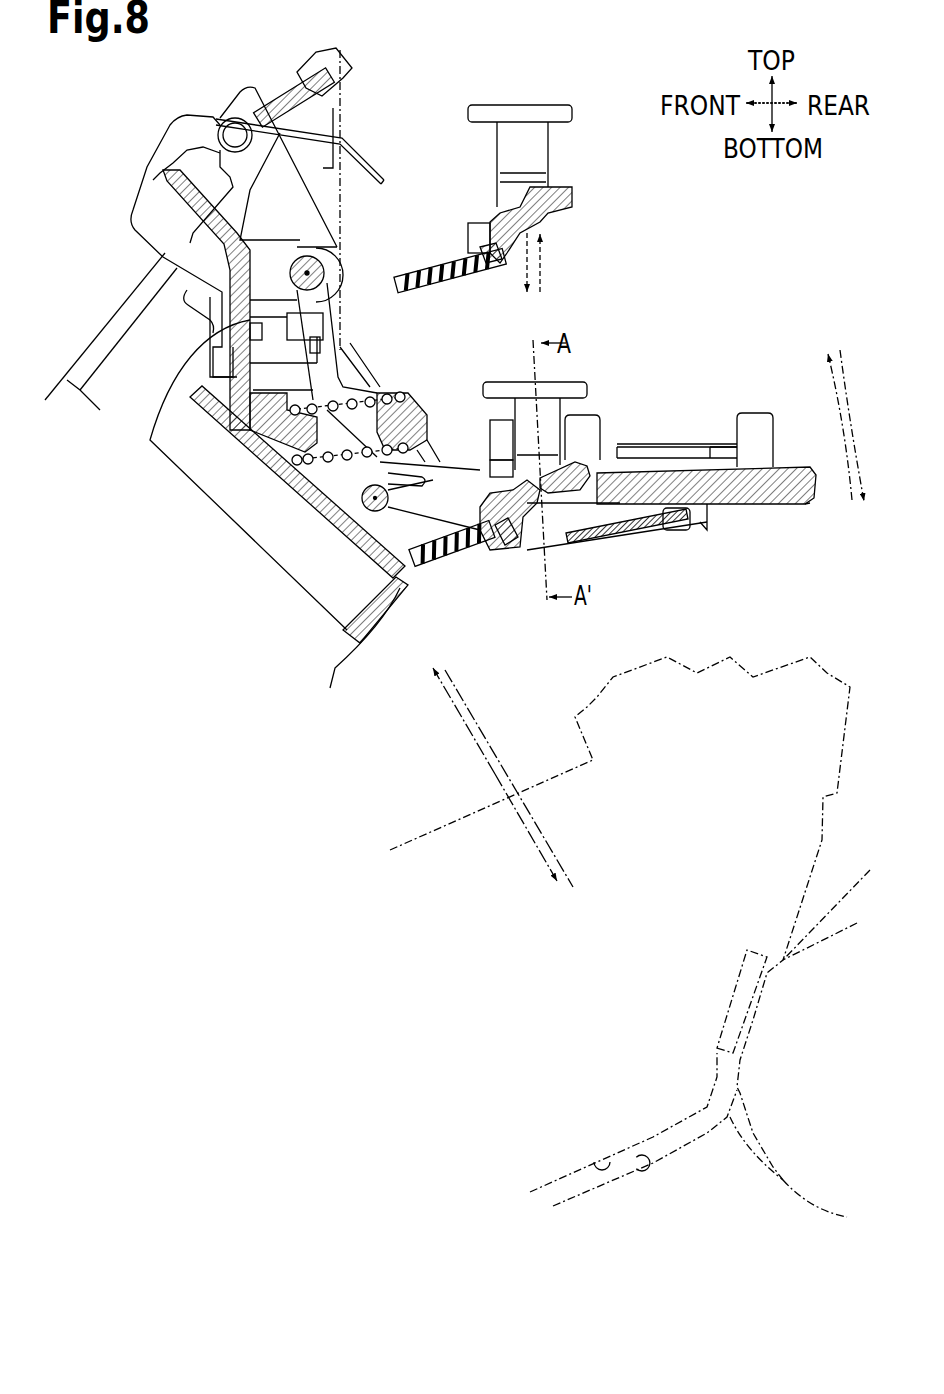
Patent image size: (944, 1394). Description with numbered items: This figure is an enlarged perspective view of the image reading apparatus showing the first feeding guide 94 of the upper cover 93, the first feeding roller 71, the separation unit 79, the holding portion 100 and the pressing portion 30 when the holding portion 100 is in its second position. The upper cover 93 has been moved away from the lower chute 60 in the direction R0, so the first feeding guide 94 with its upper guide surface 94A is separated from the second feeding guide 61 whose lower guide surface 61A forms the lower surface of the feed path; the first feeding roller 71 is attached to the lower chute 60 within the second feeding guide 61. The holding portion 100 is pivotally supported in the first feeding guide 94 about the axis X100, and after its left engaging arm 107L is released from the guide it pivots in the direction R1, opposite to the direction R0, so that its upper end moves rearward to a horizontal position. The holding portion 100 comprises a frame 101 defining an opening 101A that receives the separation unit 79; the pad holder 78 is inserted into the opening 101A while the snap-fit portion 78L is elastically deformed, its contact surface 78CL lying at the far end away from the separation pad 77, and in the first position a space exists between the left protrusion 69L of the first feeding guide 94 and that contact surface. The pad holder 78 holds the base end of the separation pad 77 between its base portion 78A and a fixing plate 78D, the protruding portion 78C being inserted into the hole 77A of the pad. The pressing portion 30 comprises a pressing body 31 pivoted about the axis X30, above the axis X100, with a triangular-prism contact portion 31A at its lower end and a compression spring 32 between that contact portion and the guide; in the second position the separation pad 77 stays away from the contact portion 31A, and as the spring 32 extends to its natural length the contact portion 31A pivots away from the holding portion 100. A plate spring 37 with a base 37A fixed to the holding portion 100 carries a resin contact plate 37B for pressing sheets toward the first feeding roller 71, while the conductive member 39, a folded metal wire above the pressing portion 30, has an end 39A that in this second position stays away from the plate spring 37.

The upper cover 93 is at (176, 115).
The left protrusion 69L is at (207, 377).
The conductive member 39 is at (260, 110).
The end of conductive member 39A is at (377, 176).
The axis of pressing body X30 is at (342, 258).
The pressing body 31 is at (317, 316).
The spring 32 is at (357, 390).
The contact portion 31A is at (428, 412).
The pressing portion 30 is at (290, 462).
The axis of holding portion X100 is at (338, 474).
The first feeding guide 94 is at (345, 628).
The upper guide surface 94A is at (596, 1160).
The separation pad 77 is at (416, 266).
The hole 77A is at (487, 263).
The base portion 78A is at (483, 227).
The protruding portion 78C is at (484, 268).
The pad holder 78 is at (582, 186).
The separation unit 79 is at (582, 102).
The contact surface 78CL is at (490, 106).
The left snap-fit portion 78L is at (520, 120).
The fixing plate 78D is at (486, 550).
The plate spring 37 is at (700, 530).
The base of plate spring 37A is at (693, 460).
The holding portion 100 is at (766, 406).
The left engaging arm 107L is at (750, 412).
The opening 101A is at (557, 494).
The frame 101 is at (633, 521).
The contact plate 37B is at (662, 533).
The pivot direction of holding portion R1 is at (850, 380).
The moving direction of first feeding guide R0 is at (497, 747).
The lower chute 60 is at (833, 906).
The second feeding guide 61 is at (733, 1181).
The lower guide surface 61A is at (650, 1165).
The first feeding roller 71 is at (790, 1182).